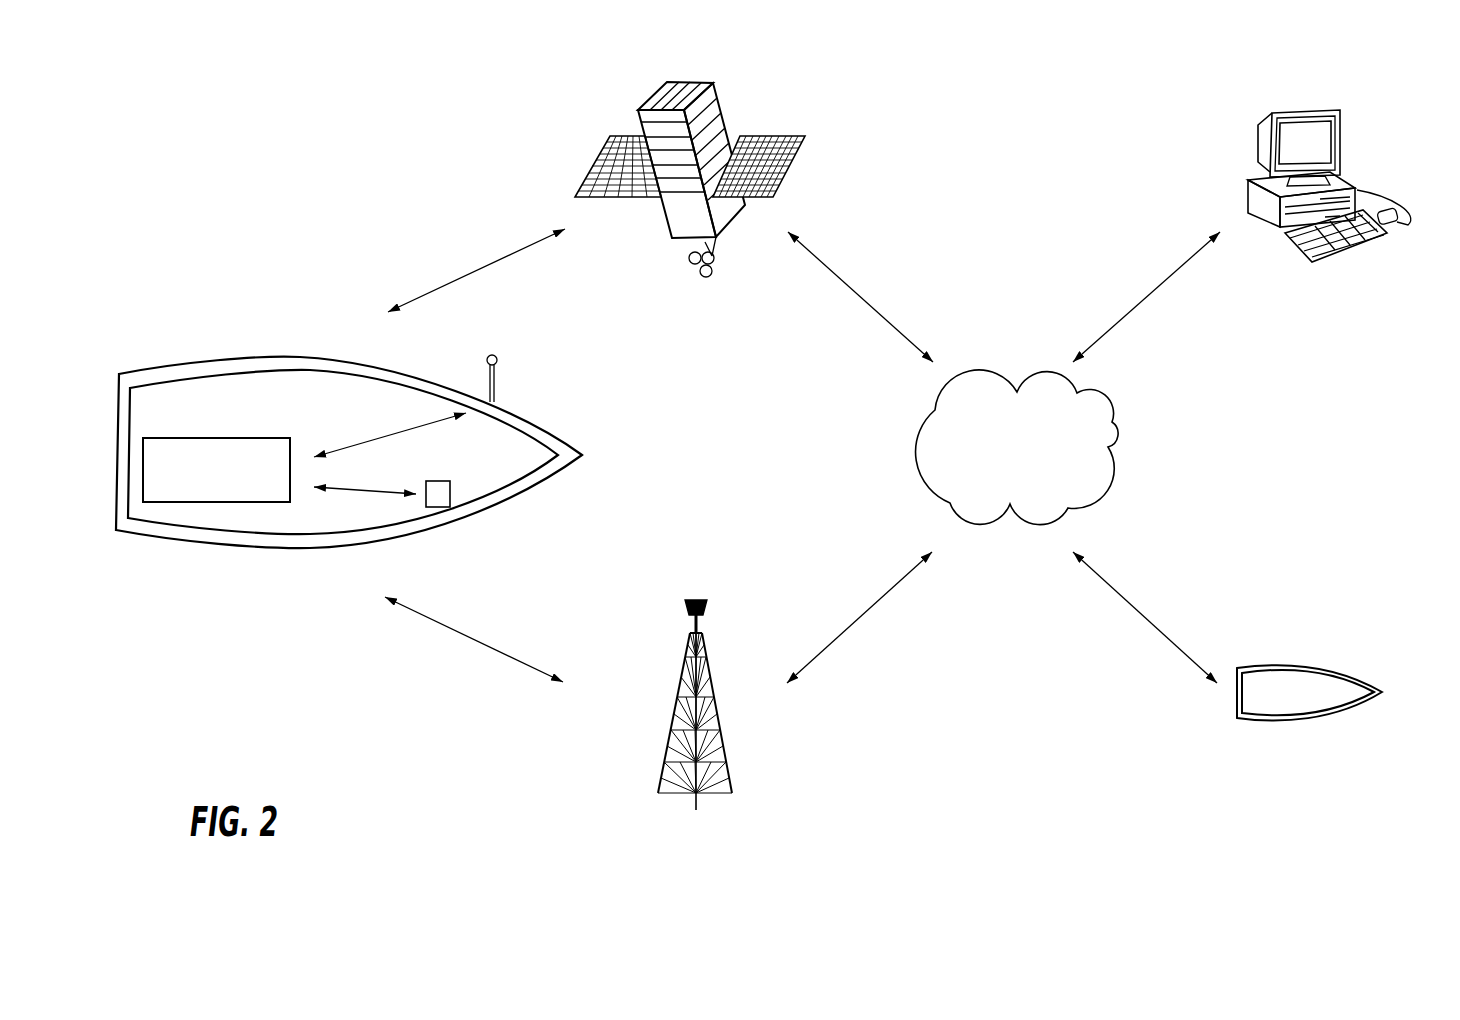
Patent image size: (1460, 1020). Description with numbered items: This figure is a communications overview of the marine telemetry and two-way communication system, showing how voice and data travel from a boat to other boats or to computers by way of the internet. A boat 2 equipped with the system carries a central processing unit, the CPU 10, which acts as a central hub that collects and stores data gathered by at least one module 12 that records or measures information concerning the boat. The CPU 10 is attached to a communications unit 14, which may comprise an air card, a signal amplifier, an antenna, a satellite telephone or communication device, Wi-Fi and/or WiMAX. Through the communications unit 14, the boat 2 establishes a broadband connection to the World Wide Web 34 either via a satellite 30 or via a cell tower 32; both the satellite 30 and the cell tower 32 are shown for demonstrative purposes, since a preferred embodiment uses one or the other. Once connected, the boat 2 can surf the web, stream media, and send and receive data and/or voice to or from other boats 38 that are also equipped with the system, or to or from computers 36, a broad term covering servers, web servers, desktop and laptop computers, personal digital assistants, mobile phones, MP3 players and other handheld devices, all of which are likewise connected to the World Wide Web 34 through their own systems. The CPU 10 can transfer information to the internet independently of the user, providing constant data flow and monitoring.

The boat 2 is at (283, 537).
The central processing unit (CPU) 10 is at (216, 470).
The module 12 is at (438, 494).
The communications unit 14 is at (497, 357).
The satellite 30 is at (713, 100).
The cell tower 32 is at (707, 604).
The World Wide Web (WWW) 34 is at (1113, 420).
The computers 36 is at (1340, 140).
The other boats 38 is at (1358, 672).